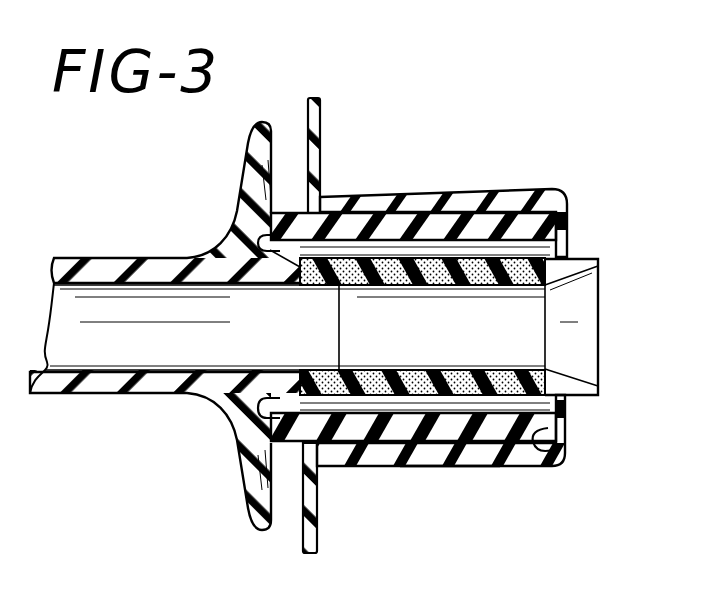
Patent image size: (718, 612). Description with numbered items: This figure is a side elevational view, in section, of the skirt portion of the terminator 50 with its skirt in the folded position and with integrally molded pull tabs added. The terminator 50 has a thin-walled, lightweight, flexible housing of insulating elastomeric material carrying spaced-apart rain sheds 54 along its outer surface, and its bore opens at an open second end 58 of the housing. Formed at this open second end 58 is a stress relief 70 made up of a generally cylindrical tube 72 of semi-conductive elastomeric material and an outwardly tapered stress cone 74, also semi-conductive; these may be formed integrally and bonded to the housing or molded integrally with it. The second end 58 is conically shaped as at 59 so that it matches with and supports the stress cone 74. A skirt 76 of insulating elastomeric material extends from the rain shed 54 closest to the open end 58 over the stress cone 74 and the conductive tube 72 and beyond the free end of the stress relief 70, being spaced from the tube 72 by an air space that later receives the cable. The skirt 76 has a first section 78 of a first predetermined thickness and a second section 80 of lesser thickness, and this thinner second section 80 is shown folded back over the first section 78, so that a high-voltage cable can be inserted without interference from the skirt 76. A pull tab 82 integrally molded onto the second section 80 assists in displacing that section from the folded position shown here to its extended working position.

The terminator 50 is at (446, 98).
The rain shed 54 is at (243, 490).
The open second end 58 is at (340, 331).
The conically shaped portion 59 is at (258, 402).
The stress relief 70 is at (382, 405).
The cylindrical tube 72 is at (548, 258).
The stress cone 74 is at (255, 258).
The skirt 76 is at (570, 424).
The first section 78 is at (522, 440).
The second section 80 is at (448, 467).
The pull tab 82 is at (321, 128).